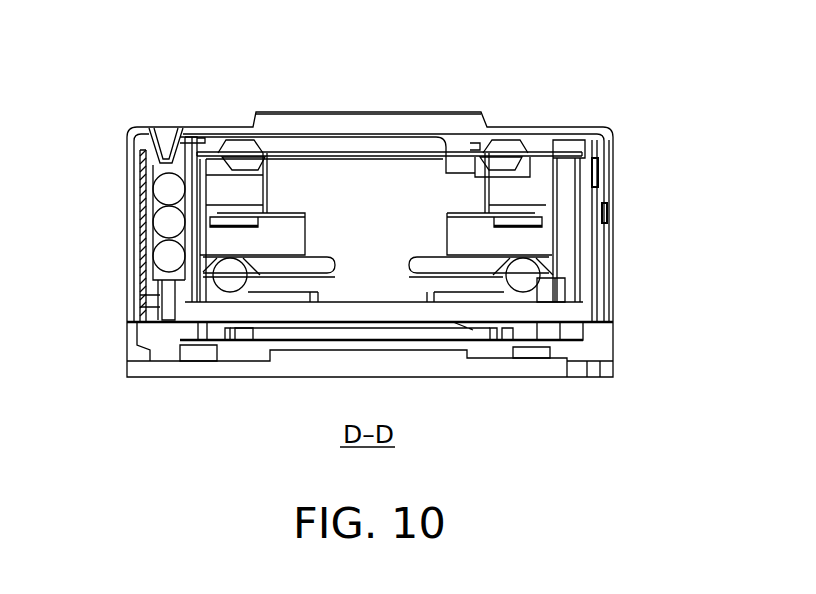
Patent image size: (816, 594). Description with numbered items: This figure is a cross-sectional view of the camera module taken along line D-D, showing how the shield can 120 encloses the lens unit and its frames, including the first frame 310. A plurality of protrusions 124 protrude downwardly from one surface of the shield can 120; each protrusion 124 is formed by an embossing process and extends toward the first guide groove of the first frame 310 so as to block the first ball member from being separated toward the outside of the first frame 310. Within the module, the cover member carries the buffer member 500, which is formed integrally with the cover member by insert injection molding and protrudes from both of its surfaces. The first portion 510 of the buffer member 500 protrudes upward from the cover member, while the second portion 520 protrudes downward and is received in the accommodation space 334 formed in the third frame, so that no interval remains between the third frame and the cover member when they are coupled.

The shield can 120 is at (230, 127).
The protrusion 124 is at (158, 128).
The first frame 310 is at (140, 229).
The accommodation space 334 is at (525, 168).
The buffer member 500 is at (468, 140).
The first portion 510 is at (525, 148).
The second portion 520 is at (520, 161).